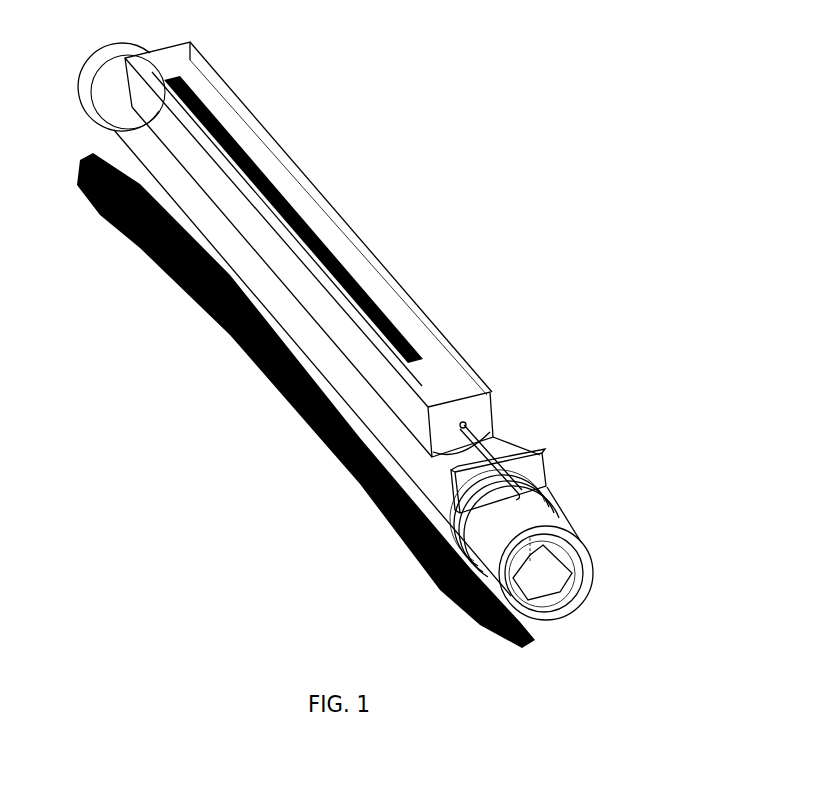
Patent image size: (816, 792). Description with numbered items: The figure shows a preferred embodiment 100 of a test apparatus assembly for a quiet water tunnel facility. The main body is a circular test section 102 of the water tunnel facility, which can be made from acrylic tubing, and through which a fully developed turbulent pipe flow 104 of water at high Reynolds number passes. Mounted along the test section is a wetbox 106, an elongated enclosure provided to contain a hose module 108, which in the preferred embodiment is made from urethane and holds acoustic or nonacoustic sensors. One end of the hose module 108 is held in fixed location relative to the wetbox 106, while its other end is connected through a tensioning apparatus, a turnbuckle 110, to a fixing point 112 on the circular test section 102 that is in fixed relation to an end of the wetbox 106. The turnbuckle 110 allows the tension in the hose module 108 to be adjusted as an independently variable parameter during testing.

The preferred embodiment 100 is at (582, 291).
The circular test section 102 is at (178, 216).
The fully developed turbulent pipe flow 104 is at (584, 558).
The wetbox 106 is at (335, 172).
The hose module 108 is at (405, 332).
The turnbuckle 110 is at (461, 457).
The fixing point 112 is at (572, 455).